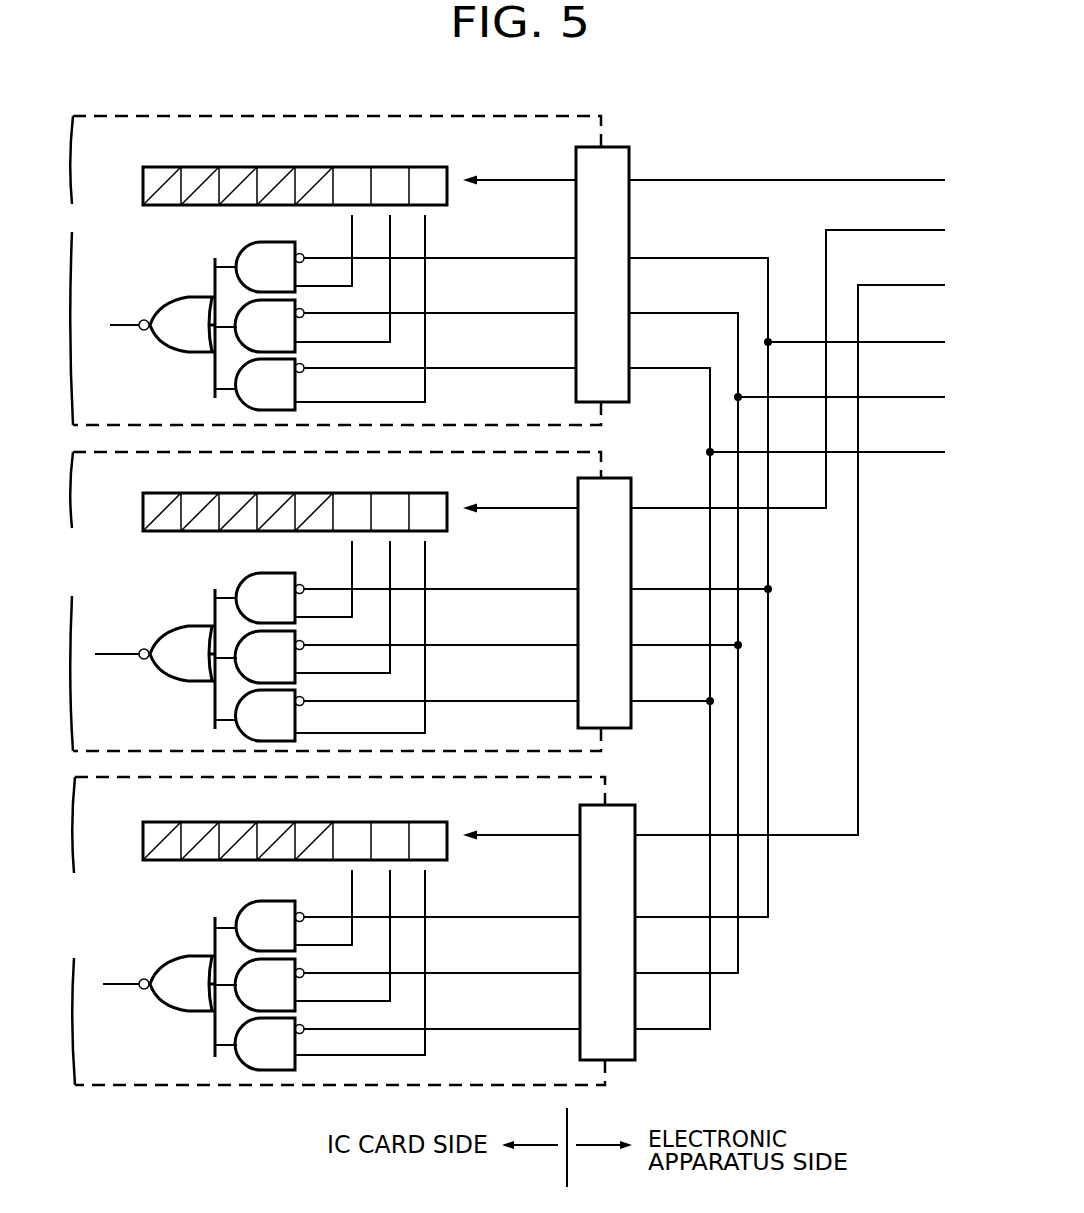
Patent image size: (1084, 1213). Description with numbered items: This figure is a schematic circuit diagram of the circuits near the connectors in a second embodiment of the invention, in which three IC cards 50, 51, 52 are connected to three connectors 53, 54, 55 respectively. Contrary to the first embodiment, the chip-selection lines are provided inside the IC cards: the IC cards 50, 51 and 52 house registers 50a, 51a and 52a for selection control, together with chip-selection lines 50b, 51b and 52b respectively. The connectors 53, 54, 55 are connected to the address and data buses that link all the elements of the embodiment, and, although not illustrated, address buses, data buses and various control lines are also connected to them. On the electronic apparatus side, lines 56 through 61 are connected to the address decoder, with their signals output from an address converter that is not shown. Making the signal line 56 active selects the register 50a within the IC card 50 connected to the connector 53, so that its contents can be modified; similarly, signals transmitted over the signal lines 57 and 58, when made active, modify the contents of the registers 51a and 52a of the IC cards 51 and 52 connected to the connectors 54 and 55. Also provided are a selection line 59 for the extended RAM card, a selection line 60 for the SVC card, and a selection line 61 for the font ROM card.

The IC card 50 is at (495, 117).
The register 50a is at (143, 177).
The chip-selection line 50b is at (121, 330).
The IC card 51 is at (607, 455).
The register 51a is at (143, 510).
The chip-selection line 51b is at (117, 658).
The IC card 52 is at (607, 793).
The register 52a is at (143, 842).
The chip-selection line 52b is at (123, 988).
The connector 53 is at (632, 160).
The connector 54 is at (632, 493).
The connector 55 is at (635, 818).
The signal line 56 is at (865, 179).
The signal line 57 is at (860, 230).
The signal line 58 is at (866, 285).
The selection line 59 is at (868, 342).
The selection line 60 is at (868, 397).
The selection line 61 is at (870, 452).